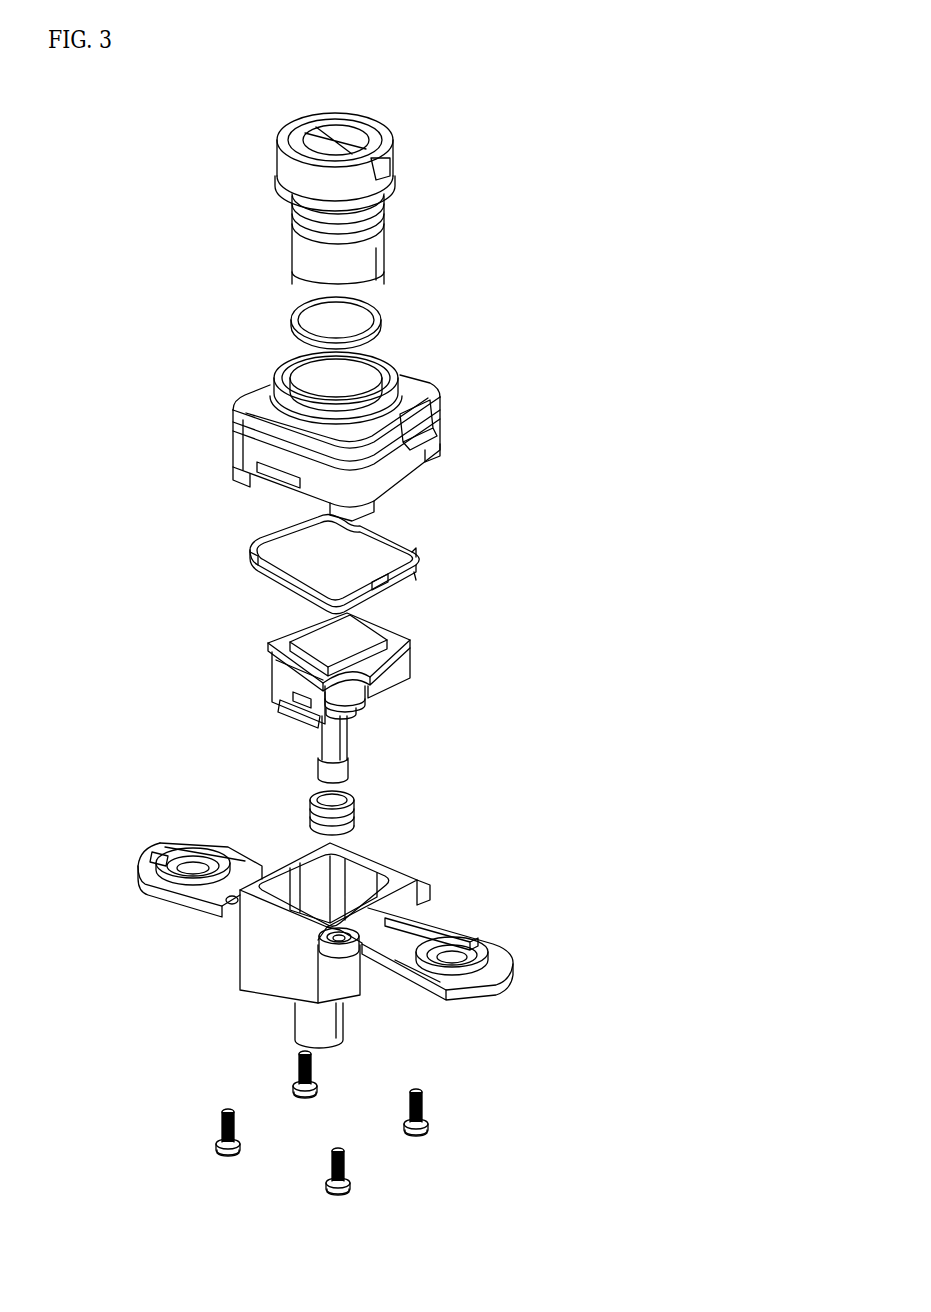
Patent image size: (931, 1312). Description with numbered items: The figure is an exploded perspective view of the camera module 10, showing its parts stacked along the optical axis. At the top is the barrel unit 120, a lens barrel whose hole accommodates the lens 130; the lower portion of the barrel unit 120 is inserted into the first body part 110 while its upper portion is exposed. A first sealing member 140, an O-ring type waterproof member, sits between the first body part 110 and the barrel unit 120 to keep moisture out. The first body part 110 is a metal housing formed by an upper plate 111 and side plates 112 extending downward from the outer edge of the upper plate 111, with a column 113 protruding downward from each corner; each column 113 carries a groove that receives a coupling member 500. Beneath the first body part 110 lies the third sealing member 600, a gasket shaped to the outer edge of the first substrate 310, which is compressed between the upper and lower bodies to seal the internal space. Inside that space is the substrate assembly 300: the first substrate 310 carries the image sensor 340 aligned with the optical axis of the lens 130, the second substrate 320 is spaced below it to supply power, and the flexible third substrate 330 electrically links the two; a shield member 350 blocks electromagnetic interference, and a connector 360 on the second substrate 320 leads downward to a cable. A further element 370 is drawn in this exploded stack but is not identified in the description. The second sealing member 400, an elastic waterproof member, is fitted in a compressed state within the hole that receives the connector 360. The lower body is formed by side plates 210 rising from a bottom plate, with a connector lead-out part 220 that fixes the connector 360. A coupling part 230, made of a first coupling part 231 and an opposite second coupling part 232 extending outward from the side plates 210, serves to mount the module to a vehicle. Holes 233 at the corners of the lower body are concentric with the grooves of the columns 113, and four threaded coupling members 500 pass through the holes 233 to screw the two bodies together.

The camera module 10 is at (140, 112).
The first body part 110 is at (226, 396).
The upper plate 111 is at (413, 398).
The side plate 112 is at (387, 448).
The column 113 is at (437, 450).
The barrel unit 120 is at (388, 178).
The lens 130 is at (320, 148).
The first sealing member 140 is at (292, 320).
The third sealing member 600 is at (250, 546).
The substrate assembly 300 is at (256, 659).
The first substrate 310 is at (383, 658).
The second substrate 320 is at (367, 703).
The third substrate 330 is at (390, 682).
The image sensor 340 is at (370, 640).
The shield member 350 is at (292, 687).
The connector 360 is at (328, 747).
The collar 370 is at (348, 713).
The second sealing member 400 is at (357, 810).
The side plate 210 is at (267, 975).
The connector lead-out part 220 is at (303, 1025).
The coupling part 230 is at (389, 894).
The first coupling part 231 is at (240, 860).
The second coupling part 232 is at (510, 960).
The hole 233 is at (341, 944).
The coupling member 500 is at (425, 1108).